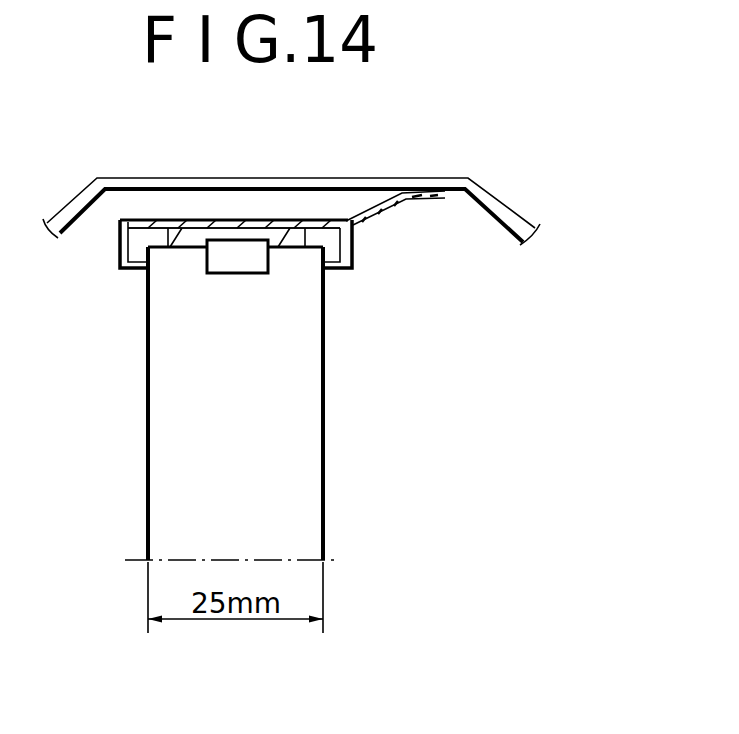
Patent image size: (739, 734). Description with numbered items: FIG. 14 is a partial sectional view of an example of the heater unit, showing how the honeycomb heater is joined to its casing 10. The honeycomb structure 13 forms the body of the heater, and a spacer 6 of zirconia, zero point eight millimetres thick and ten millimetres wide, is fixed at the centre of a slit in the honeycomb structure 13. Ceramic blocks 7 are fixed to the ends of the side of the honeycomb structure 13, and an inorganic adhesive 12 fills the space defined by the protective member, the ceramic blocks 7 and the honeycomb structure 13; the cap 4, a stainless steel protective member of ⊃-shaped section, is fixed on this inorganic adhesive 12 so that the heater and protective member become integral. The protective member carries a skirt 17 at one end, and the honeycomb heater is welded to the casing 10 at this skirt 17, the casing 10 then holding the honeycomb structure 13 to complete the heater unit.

The cap 4 is at (222, 224).
The spacer 6 is at (225, 266).
The ceramic block 7 is at (333, 258).
The casing 10 is at (350, 187).
The inorganic adhesive 12 is at (196, 233).
The honeycomb structure 13 is at (318, 375).
The skirt 17 is at (382, 208).